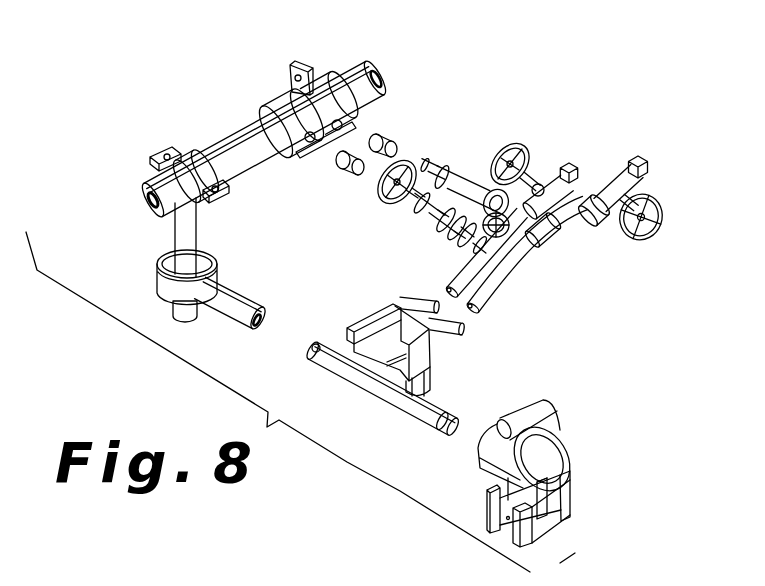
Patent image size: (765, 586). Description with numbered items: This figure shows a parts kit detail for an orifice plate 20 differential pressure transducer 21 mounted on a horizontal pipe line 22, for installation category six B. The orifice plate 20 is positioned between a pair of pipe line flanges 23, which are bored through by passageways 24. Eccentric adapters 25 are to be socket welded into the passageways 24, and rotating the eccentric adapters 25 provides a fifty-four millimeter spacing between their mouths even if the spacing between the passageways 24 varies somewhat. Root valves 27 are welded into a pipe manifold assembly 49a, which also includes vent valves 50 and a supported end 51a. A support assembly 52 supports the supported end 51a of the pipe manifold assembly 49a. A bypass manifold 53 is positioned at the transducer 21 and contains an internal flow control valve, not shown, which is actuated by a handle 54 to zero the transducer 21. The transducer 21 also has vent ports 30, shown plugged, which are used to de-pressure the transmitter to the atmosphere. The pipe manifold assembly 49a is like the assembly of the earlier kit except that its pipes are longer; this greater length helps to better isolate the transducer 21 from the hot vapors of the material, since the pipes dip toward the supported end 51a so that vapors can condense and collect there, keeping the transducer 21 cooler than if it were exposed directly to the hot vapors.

The orifice plate 20 is at (288, 62).
The differential pressure transducer 21 is at (547, 411).
The horizontal pipe line 22 is at (378, 76).
The pipe line flanges 23 is at (325, 87).
The passageways 24 is at (352, 117).
The eccentric adapters 25 is at (396, 141).
The root valves 27 is at (463, 180).
The vent ports 30 is at (490, 512).
The pipe manifold assembly 49a is at (468, 298).
The vent valves 50 is at (606, 178).
The supported end 51a is at (425, 356).
The support assembly 52 is at (190, 228).
The bypass manifold 53 is at (349, 327).
The handle 54 is at (408, 362).